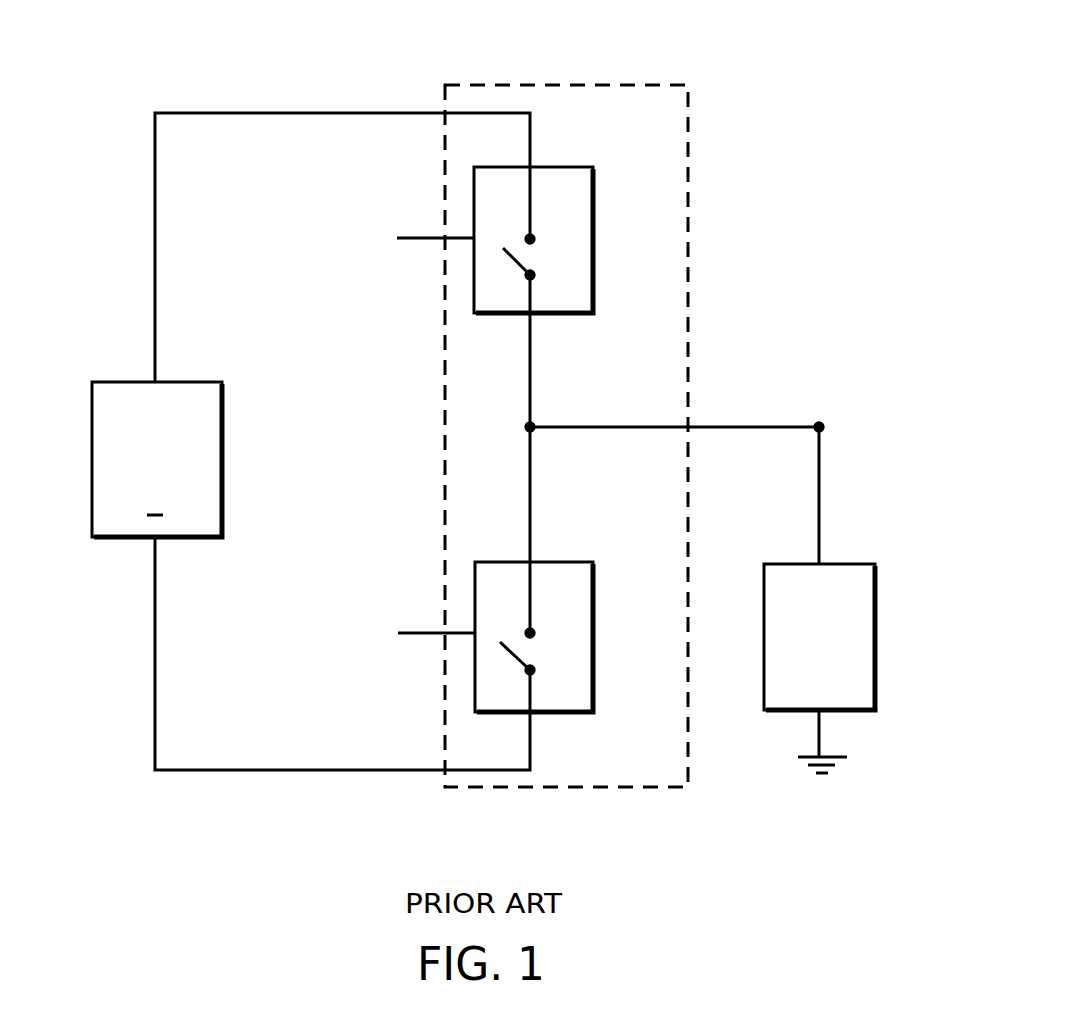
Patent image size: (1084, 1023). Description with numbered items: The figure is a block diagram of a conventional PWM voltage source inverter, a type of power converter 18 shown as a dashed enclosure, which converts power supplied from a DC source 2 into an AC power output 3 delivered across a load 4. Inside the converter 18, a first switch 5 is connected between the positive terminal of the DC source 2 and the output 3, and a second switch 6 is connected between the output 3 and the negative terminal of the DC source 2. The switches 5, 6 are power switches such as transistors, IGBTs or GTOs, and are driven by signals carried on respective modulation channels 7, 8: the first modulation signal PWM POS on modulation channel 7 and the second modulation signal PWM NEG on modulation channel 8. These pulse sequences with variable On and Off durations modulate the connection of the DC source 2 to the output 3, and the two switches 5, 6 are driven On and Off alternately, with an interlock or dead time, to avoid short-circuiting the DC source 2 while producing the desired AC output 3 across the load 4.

The DC source 2 is at (92, 485).
The output 3 is at (819, 427).
The load 4 is at (875, 607).
The first switch 5 is at (593, 197).
The second switch 6 is at (593, 612).
The modulation channel 7 is at (430, 238).
The modulation channel 8 is at (428, 633).
The power converter 18 is at (593, 83).